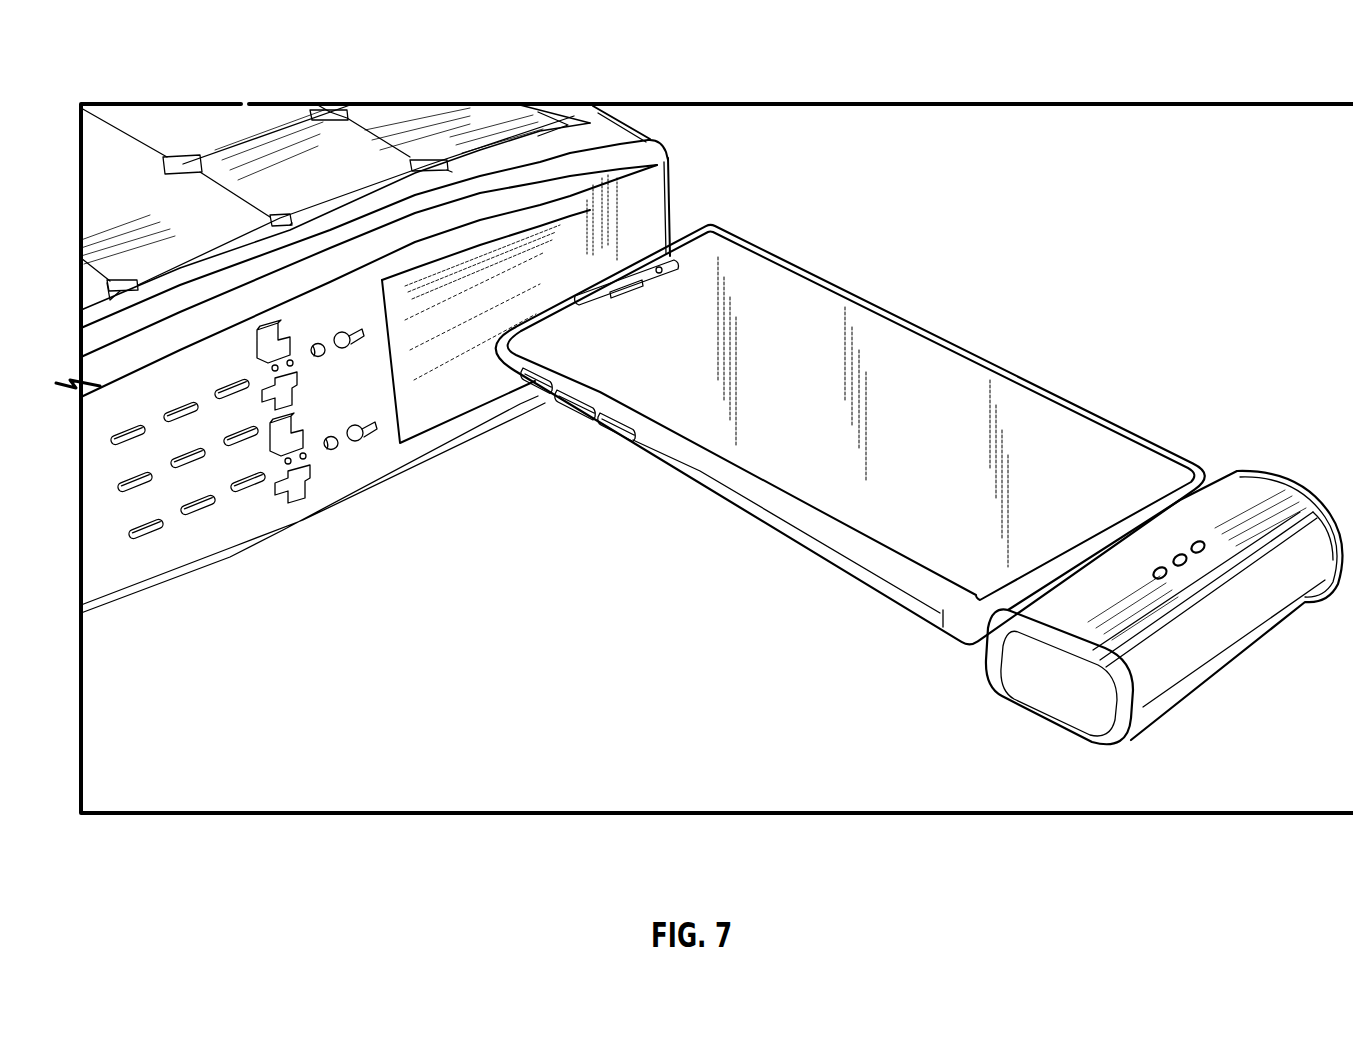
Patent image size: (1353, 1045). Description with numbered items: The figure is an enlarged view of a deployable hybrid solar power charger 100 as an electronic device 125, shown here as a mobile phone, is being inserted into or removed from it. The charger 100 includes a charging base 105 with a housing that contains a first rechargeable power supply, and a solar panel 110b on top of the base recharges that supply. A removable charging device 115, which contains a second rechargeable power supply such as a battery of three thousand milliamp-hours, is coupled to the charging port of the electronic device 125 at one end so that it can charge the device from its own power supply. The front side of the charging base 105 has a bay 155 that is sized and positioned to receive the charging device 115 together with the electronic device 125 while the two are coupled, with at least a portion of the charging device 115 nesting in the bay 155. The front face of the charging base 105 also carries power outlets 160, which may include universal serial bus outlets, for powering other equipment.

The deployable hybrid solar power charger 100 is at (1158, 72).
The charging base 105 is at (660, 138).
The solar panel 110b is at (559, 108).
The charging device 115 is at (1223, 670).
The electronic device 125 is at (905, 321).
The bay 155 is at (451, 396).
The power outlets 160 is at (331, 458).